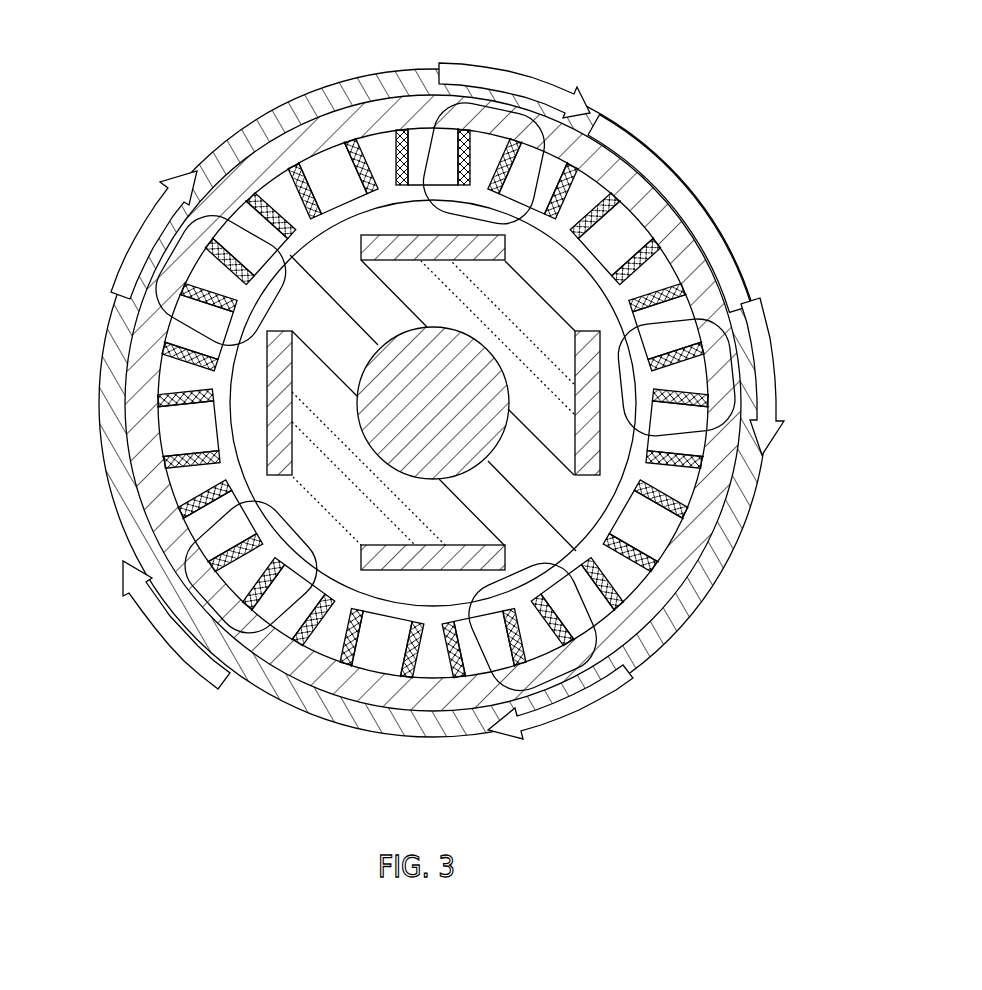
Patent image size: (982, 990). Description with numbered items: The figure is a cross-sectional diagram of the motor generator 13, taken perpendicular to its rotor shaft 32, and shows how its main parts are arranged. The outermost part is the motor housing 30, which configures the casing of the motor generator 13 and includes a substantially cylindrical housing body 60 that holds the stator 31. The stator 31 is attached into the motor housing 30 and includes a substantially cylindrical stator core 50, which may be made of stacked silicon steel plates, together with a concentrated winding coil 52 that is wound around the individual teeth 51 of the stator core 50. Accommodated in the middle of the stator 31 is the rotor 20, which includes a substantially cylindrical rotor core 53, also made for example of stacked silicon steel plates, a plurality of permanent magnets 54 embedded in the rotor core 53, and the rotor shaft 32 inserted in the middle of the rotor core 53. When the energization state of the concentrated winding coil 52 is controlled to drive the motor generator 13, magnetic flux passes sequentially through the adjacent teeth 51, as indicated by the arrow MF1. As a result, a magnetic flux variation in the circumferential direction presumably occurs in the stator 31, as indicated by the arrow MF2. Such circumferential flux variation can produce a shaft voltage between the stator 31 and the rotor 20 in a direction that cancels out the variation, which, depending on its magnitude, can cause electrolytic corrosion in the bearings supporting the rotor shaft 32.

The motor generator 13 is at (680, 118).
The rotor 20 is at (115, 412).
The motor housing 30 is at (688, 172).
The stator 31 is at (122, 458).
The rotor shaft 32 is at (485, 358).
The stator core 50 is at (362, 110).
The teeth 51 is at (330, 180).
The concentrated winding coil 52 is at (298, 190).
The rotor core 53 is at (517, 450).
The permanent magnets 54 is at (421, 262).
The housing body 60 is at (700, 210).
The arrow MF1 is at (475, 108).
The arrow MF2 is at (488, 64).